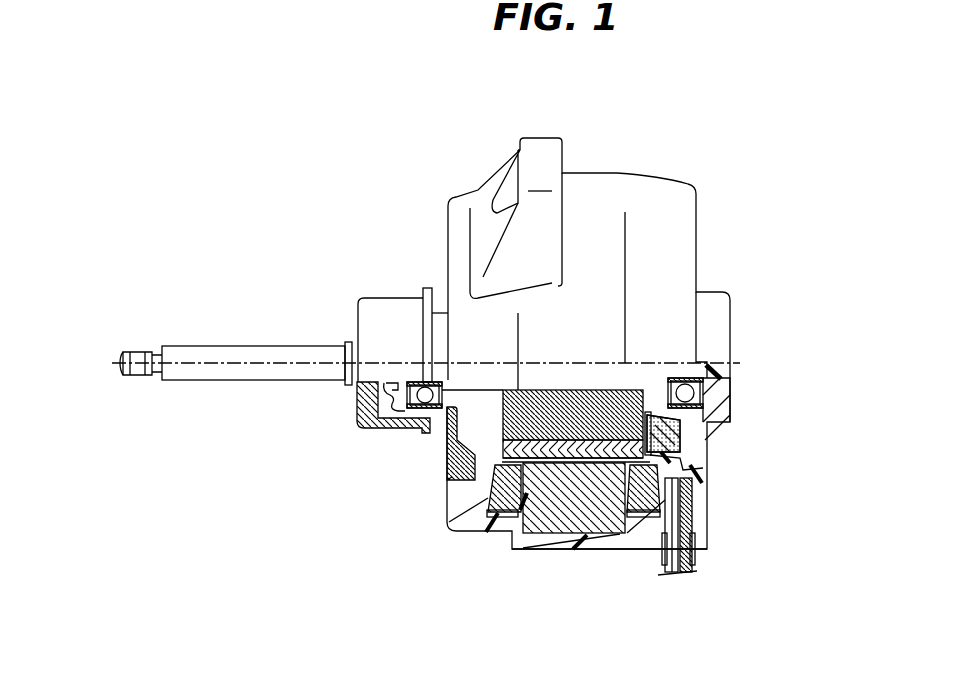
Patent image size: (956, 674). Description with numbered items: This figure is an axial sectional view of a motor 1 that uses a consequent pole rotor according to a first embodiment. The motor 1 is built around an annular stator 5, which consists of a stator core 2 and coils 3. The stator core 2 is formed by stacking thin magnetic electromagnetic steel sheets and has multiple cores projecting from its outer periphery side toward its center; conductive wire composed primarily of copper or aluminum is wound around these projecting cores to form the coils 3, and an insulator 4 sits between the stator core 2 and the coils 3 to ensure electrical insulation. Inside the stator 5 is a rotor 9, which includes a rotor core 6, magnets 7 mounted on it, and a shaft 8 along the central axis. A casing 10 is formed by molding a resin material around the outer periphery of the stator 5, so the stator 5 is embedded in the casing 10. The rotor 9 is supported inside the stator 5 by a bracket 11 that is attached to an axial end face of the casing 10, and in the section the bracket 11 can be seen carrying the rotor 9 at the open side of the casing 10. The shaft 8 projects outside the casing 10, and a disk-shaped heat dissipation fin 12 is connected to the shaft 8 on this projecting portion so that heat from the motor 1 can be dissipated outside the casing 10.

The motor 1 is at (682, 117).
The stator core 2 is at (560, 510).
The coils 3 is at (500, 502).
The insulator 4 is at (510, 515).
The stator 5 is at (607, 537).
The rotor core 6 is at (730, 422).
The magnets 7 is at (707, 463).
The shaft 8 is at (250, 375).
The rotor 9 is at (447, 465).
The casing 10 is at (663, 238).
The bracket 11 is at (450, 440).
The heat dissipation fin 12 is at (350, 343).